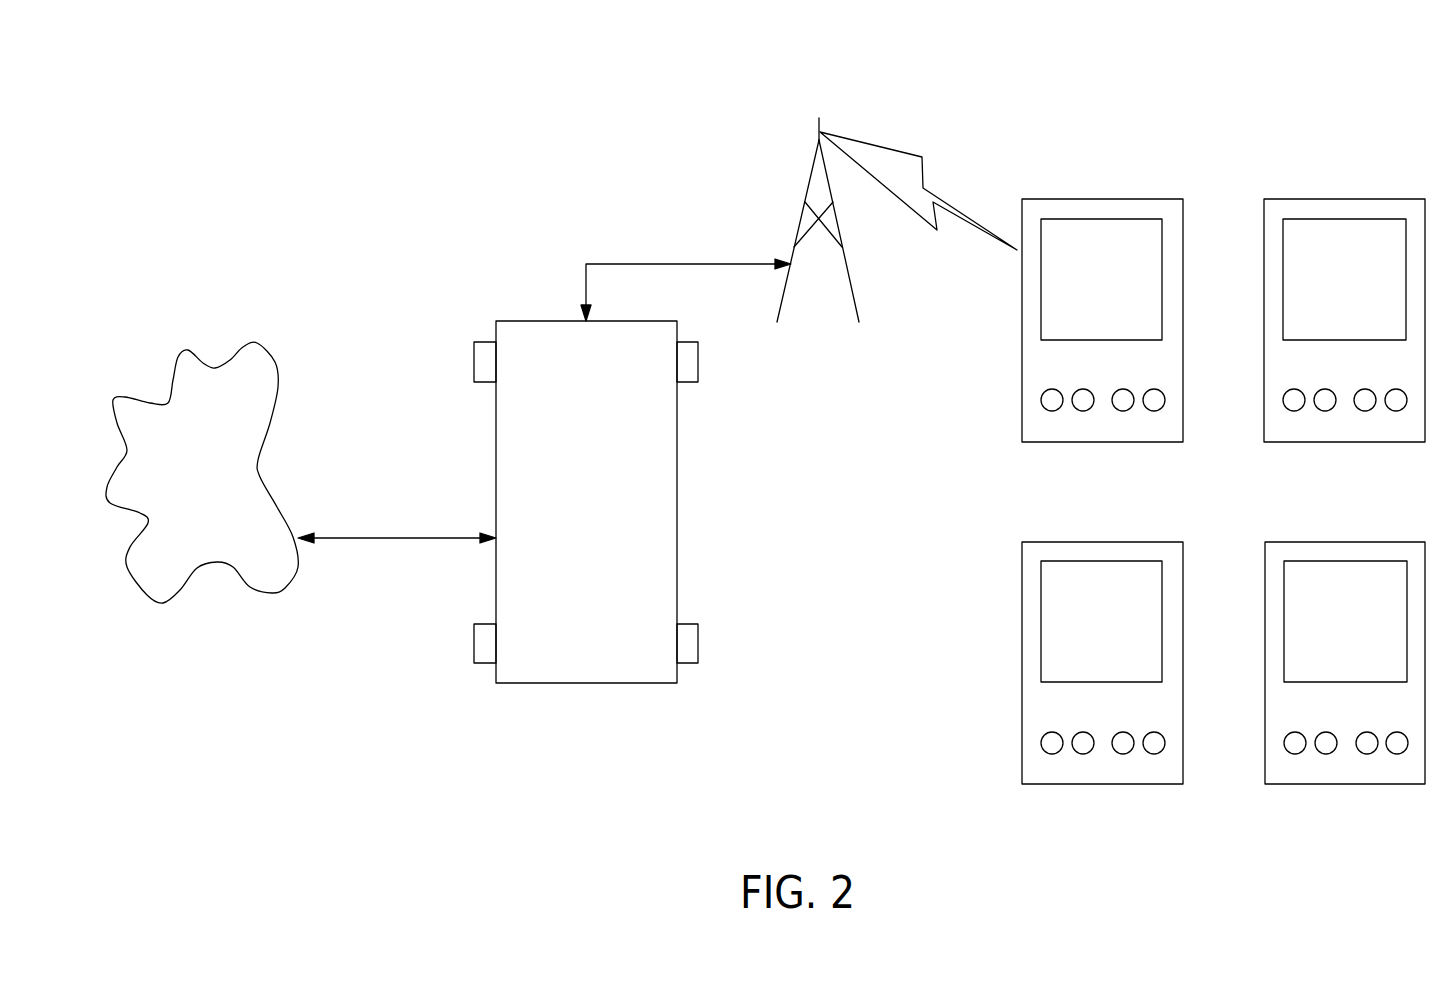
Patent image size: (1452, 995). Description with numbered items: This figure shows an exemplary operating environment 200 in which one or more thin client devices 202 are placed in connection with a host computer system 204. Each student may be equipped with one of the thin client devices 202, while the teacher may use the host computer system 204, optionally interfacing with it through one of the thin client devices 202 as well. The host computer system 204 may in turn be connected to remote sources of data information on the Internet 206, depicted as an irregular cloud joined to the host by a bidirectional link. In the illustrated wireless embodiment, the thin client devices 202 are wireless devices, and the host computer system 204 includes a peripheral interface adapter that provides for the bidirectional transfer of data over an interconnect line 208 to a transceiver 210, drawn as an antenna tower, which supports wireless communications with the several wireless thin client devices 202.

The operating environment 200 is at (478, 147).
The thin client devices 202 is at (1145, 199).
The host computer system 204 is at (613, 683).
The Internet 206 is at (275, 361).
The interconnect line 208 is at (676, 264).
The transceiver 210 is at (808, 180).